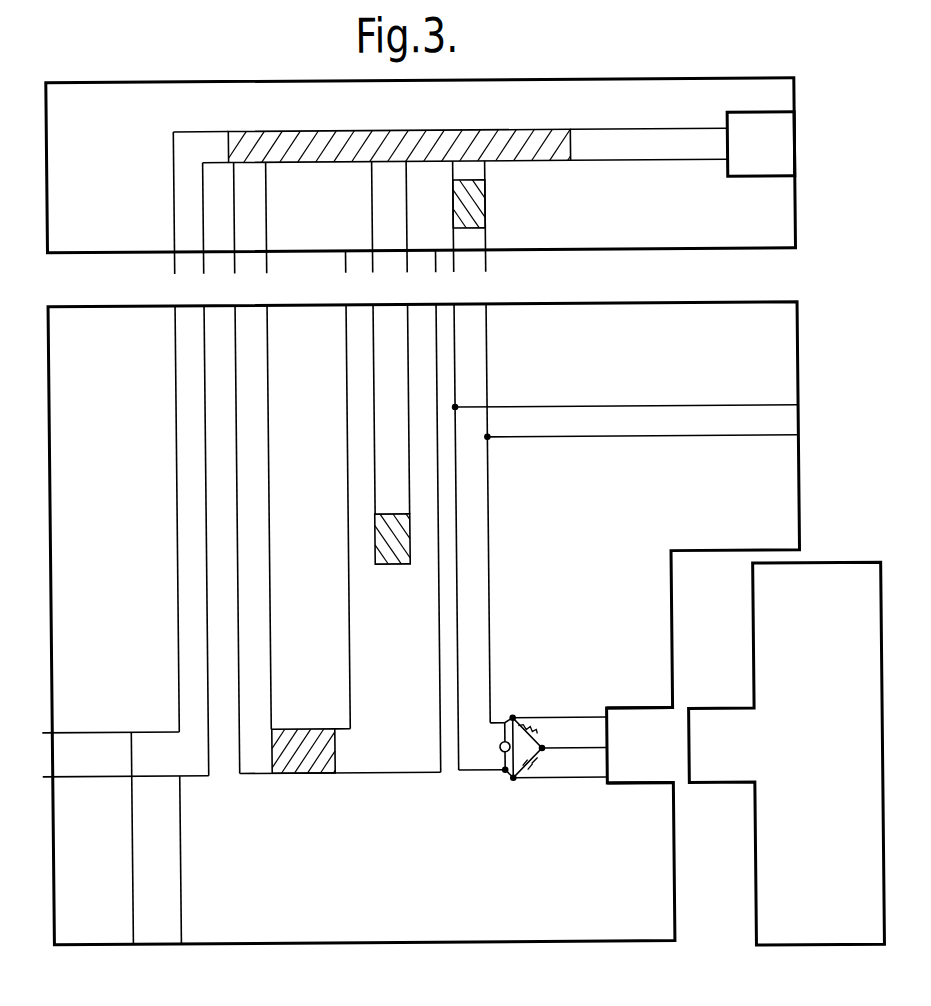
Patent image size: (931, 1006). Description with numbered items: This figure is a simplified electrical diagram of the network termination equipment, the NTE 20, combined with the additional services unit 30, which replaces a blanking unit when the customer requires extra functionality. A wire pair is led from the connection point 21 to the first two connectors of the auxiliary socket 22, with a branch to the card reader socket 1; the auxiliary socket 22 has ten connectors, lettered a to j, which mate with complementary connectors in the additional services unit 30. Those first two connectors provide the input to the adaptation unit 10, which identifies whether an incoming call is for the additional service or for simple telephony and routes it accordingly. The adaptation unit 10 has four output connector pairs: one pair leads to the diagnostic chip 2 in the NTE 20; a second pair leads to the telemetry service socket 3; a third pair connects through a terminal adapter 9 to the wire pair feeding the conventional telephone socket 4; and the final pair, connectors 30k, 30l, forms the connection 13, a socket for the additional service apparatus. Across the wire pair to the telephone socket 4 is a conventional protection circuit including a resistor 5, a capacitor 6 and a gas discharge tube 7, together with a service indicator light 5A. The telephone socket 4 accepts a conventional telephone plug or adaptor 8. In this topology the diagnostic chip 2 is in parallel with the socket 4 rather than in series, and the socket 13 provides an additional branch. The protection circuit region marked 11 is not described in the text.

The card reader socket 1 is at (156, 853).
The diagnostic chip 2 is at (303, 751).
The telemetry service socket 3 is at (393, 539).
The telephone socket 4 is at (640, 745).
The resistor 5 is at (557, 704).
The service indicator light 5A is at (645, 421).
The capacitor 6 is at (559, 790).
The gas discharge tube 7 is at (508, 762).
The telephone plug or adaptor 8 is at (785, 753).
The terminal adapter 9 is at (469, 204).
The adaptation unit 10 is at (399, 145).
The protection circuit 11 is at (584, 761).
The telephone socket 13 is at (761, 144).
The NTE 20 is at (50, 562).
The connection point 21 is at (50, 746).
The auxiliary socket 22 is at (175, 302).
The additional services unit 30 is at (50, 169).
The connector 30l is at (450, 116).
The connector 30k is at (465, 174).